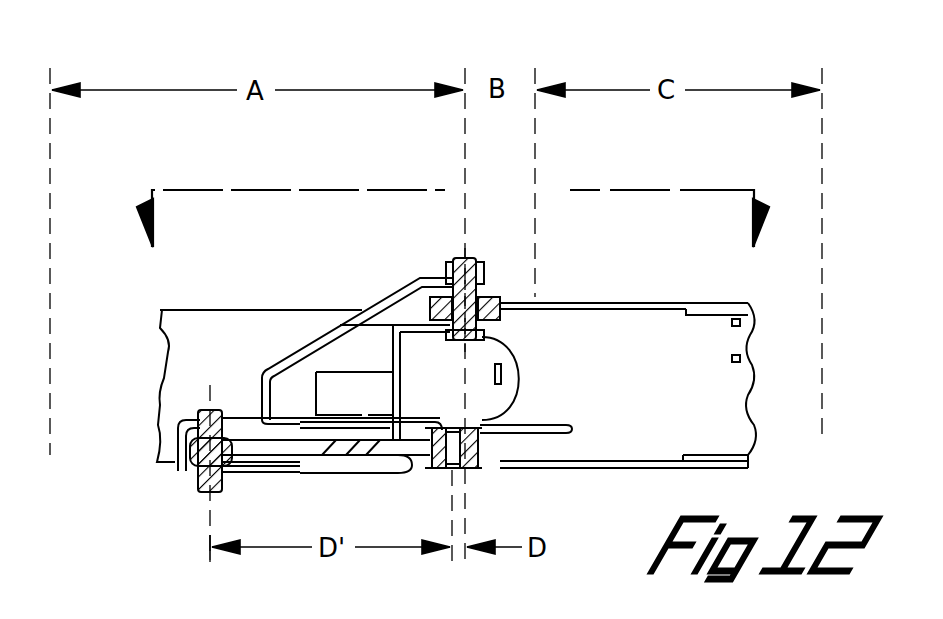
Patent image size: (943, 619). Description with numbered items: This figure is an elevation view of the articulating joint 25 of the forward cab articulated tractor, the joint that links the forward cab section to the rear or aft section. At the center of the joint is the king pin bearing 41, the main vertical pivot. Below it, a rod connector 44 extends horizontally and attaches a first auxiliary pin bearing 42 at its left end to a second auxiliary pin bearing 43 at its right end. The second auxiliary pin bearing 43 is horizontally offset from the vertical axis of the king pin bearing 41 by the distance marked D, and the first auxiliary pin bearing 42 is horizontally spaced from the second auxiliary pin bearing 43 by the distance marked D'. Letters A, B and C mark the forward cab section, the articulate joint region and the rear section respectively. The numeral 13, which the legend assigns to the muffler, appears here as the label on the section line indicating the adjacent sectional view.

The muffler 13 is at (459, 203).
The articulating joint 25 is at (440, 256).
The king pin bearing 41 is at (500, 300).
The first auxiliary pin bearing 42 is at (196, 470).
The second auxiliary pin bearing 43 is at (494, 464).
The rod connector 44 is at (335, 472).